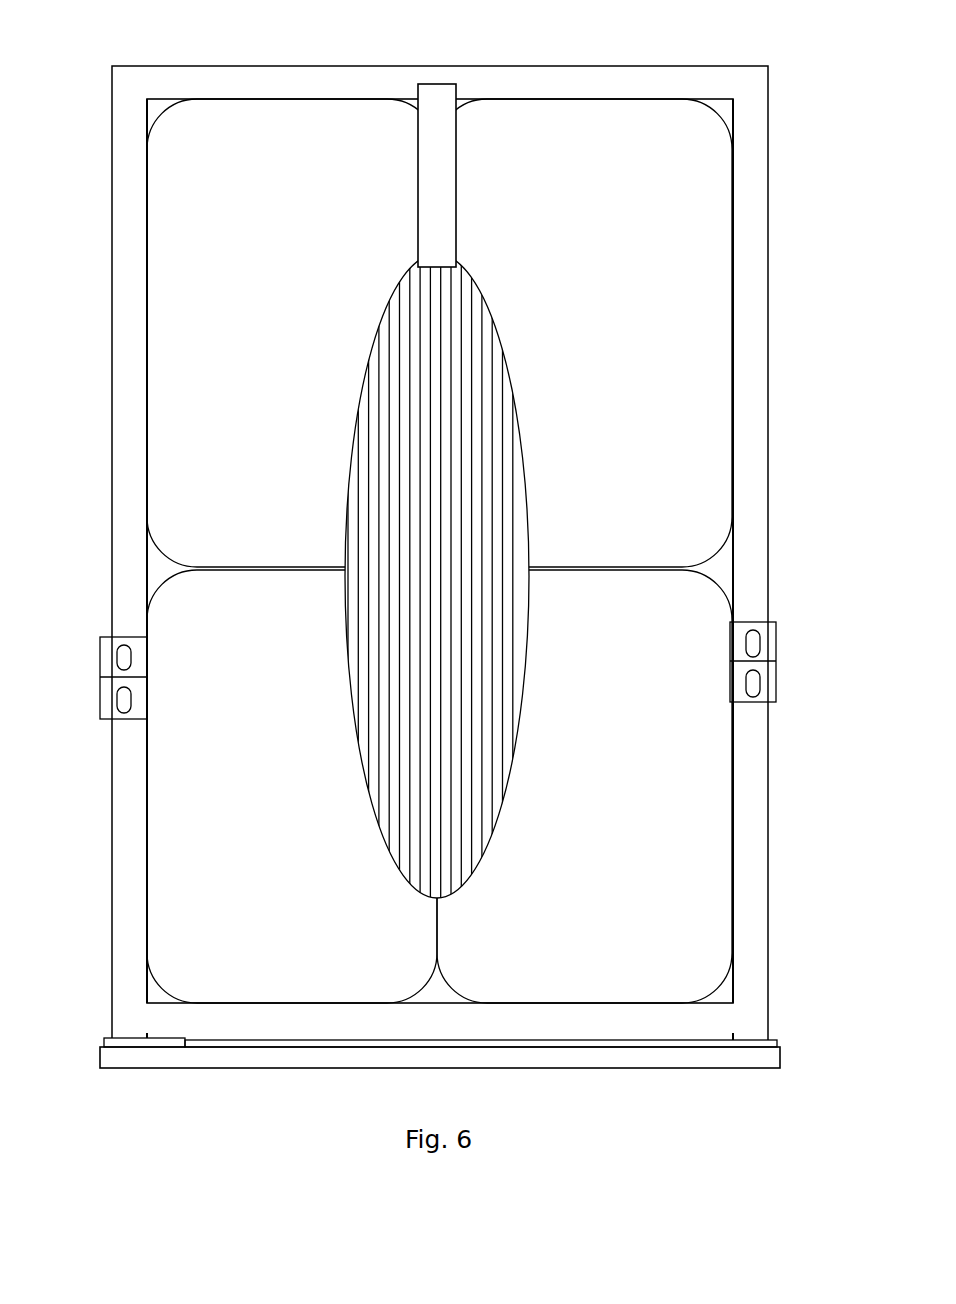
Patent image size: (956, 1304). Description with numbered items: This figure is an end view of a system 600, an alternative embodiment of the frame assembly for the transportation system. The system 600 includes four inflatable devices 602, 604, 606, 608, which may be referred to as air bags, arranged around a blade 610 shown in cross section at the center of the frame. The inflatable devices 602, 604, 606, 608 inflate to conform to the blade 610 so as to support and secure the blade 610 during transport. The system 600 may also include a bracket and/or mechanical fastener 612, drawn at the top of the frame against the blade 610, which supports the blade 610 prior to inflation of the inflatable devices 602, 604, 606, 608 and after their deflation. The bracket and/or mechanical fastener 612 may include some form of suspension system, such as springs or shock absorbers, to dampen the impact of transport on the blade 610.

The system 600 is at (418, 538).
The inflatable device 602 is at (665, 873).
The inflatable device 604 is at (193, 660).
The inflatable device 606 is at (193, 190).
The inflatable device 608 is at (703, 297).
The blade 610 is at (345, 500).
The bracket and/or mechanical fastener 612 is at (448, 84).